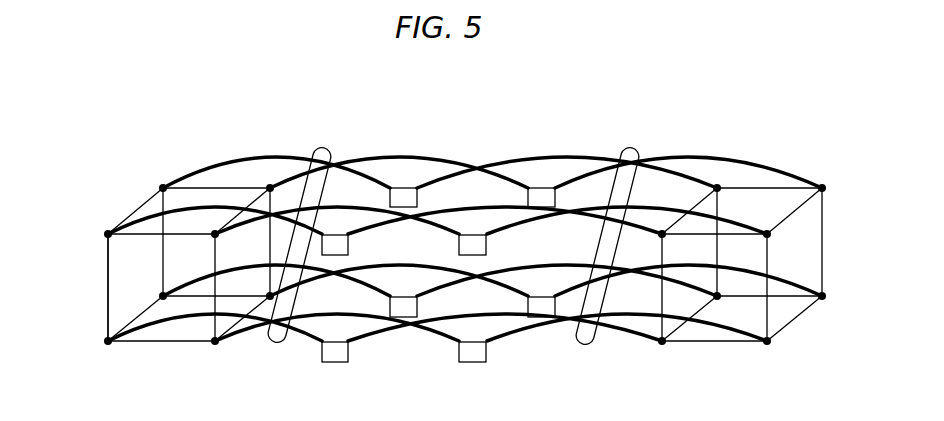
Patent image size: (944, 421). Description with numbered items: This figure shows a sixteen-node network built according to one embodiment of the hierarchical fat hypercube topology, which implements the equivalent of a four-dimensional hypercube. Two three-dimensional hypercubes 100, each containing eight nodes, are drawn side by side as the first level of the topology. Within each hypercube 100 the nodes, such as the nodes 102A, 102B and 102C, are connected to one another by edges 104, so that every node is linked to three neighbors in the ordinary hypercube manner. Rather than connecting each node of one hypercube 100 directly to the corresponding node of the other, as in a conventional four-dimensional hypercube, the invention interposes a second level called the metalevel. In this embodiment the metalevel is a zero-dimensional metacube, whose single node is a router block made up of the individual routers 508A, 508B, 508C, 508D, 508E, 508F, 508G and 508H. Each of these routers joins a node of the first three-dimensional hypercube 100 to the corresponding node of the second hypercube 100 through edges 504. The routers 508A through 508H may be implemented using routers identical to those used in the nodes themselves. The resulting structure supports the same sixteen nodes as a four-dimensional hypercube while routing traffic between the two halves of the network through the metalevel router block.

The hypercube 100 is at (176, 138).
The node 102A is at (163, 188).
The node 102B is at (822, 188).
The node 102C is at (108, 234).
The edge 104 is at (108, 282).
The edge 504 is at (322, 147).
The router 508A is at (397, 188).
The router 508B is at (545, 188).
The router 508C is at (348, 245).
The router 508D is at (487, 245).
The router 508E is at (390, 305).
The router 508F is at (528, 305).
The router 508G is at (348, 358).
The router 508H is at (487, 358).